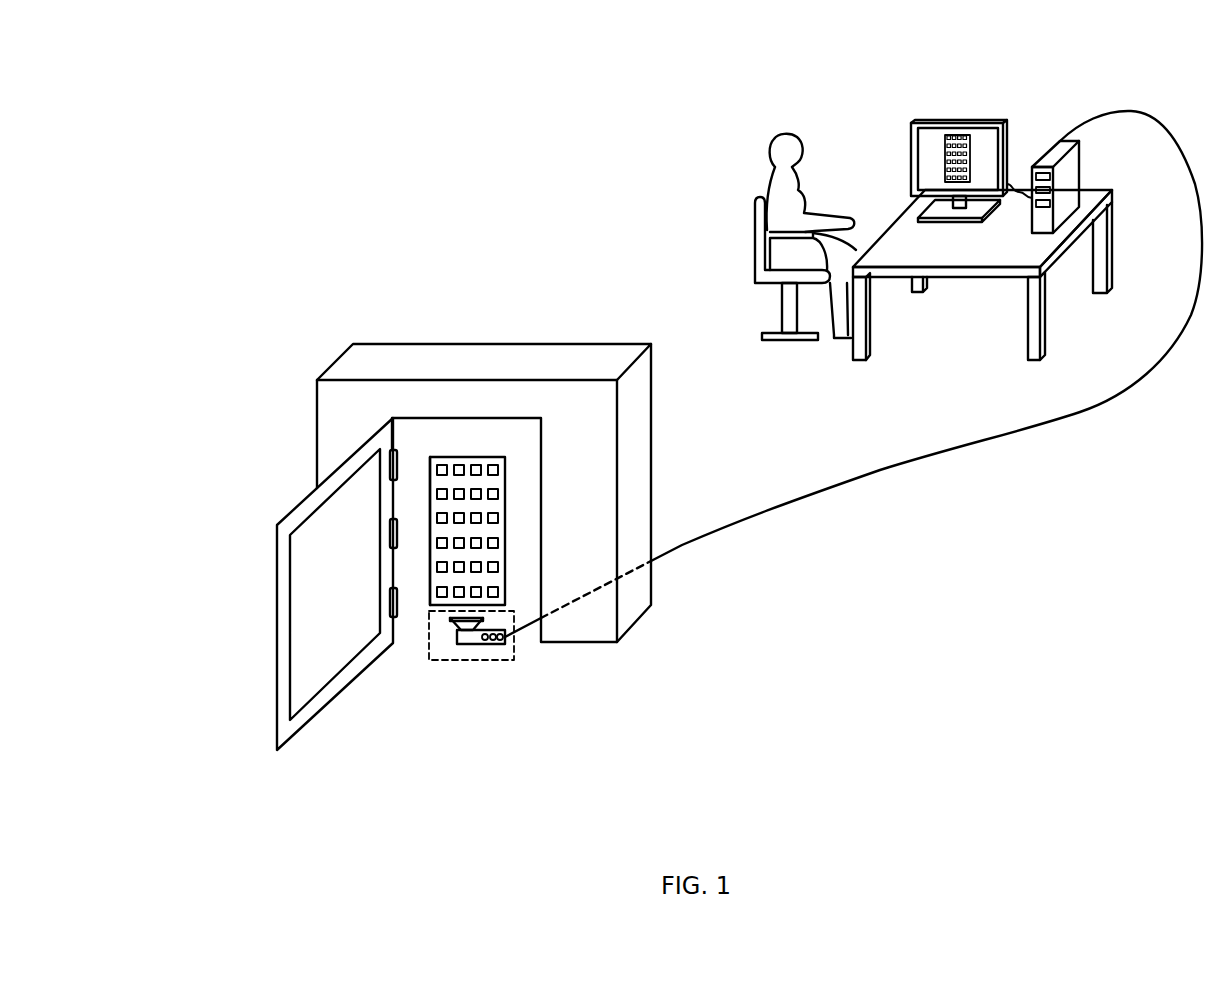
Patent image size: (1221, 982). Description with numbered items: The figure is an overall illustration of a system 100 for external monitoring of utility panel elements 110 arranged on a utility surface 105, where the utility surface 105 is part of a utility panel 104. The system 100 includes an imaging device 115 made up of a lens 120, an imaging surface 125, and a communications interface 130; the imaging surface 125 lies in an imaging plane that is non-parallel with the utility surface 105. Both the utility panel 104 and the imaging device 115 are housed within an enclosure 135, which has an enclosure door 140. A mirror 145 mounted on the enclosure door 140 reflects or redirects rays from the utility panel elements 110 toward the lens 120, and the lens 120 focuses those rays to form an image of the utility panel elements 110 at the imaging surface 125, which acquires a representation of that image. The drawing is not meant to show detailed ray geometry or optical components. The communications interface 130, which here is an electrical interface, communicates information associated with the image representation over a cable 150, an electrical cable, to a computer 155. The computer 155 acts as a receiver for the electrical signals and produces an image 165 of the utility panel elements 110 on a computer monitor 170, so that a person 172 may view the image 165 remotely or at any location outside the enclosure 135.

The system 100 is at (299, 102).
The utility panel 104 is at (428, 471).
The utility surface 105 is at (466, 485).
The utility panel elements 110 is at (474, 466).
The imaging device 115 is at (468, 660).
The lens 120 is at (454, 619).
The imaging surface 125 is at (462, 646).
The communications interface 130 is at (497, 644).
The enclosure 135 is at (317, 405).
The enclosure door 140 is at (295, 507).
The mirror 145 is at (288, 618).
The cable 150 is at (807, 496).
The computer 155 is at (1043, 138).
The image 165 is at (943, 140).
The computer monitor 170 is at (912, 137).
The person 172 is at (762, 152).